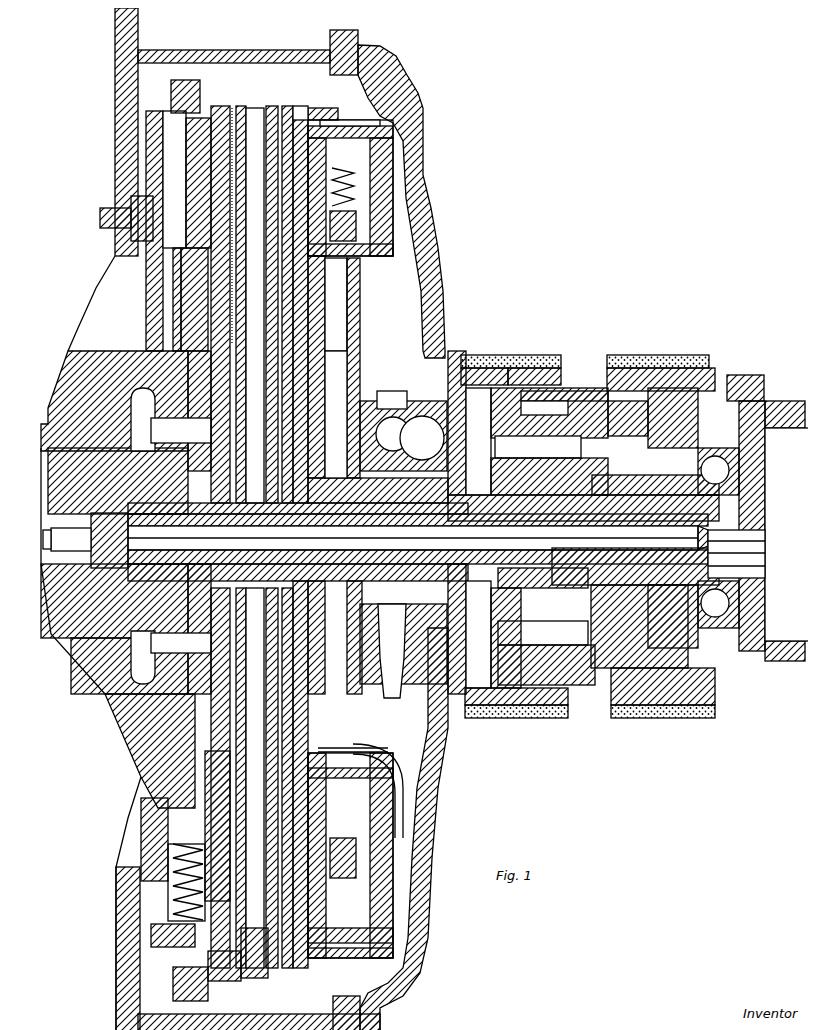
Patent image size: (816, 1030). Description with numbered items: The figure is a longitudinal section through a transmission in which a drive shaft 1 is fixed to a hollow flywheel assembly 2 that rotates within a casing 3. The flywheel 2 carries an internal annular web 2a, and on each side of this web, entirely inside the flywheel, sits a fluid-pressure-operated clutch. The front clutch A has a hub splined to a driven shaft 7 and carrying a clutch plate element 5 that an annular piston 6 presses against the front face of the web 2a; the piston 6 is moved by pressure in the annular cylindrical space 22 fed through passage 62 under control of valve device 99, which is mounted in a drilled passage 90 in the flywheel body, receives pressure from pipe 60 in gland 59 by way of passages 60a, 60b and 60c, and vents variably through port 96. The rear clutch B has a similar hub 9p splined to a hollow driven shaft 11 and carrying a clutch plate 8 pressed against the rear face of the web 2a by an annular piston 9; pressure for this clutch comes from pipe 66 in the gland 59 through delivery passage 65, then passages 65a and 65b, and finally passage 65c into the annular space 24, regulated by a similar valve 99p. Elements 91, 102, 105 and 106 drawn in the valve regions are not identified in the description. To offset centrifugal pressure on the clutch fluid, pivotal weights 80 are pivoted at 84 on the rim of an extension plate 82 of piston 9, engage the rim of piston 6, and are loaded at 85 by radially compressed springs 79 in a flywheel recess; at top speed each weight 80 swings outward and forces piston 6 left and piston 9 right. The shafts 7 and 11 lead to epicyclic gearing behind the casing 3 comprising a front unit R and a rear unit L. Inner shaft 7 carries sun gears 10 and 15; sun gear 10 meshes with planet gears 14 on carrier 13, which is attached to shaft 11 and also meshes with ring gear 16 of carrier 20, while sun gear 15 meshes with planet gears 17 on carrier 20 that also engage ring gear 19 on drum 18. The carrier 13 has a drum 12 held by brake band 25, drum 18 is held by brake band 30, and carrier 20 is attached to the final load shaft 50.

The drive shaft 1 is at (66, 648).
The flywheel assembly 2 is at (146, 148).
The internal annular web 2a is at (250, 108).
The casing 3 is at (232, 42).
The clutch plate element 5 is at (255, 305).
The annular piston 6 is at (210, 305).
The driven shaft 7 is at (469, 522).
The clutch plate 8 is at (245, 293).
The annular piston 9 is at (290, 280).
The hub 9p is at (317, 414).
The sun gear 10 is at (540, 506).
The hollow driven shaft 11 is at (496, 572).
The drum 12 is at (465, 347).
The carrier 13 is at (539, 413).
The planet gears 14 is at (555, 385).
The sun gear 15 is at (610, 575).
The ring gear 16 is at (568, 392).
The planet gears 17 is at (624, 402).
The drum 18 is at (735, 367).
The ring gear 19 is at (660, 405).
The carrier 20 is at (694, 528).
The annular cylindrical space 22 is at (185, 267).
The annular cylindrical space 24 is at (320, 740).
The brake band 25 is at (507, 347).
The brake band 30 is at (655, 347).
The final load shaft 50 is at (774, 498).
The gland 59 is at (529, 552).
The pipe 60 is at (376, 383).
The passage 60a is at (406, 495).
The passage 60b is at (345, 312).
The passage 60c is at (405, 196).
The passage 62 is at (298, 109).
The delivery passage 65 is at (338, 600).
The passage 65a is at (330, 780).
The passage 65b is at (350, 880).
The passage 65c is at (395, 800).
The pipe 66 is at (403, 655).
The springs 79 is at (162, 845).
The weight 80 is at (150, 926).
The extension plate 82 is at (255, 975).
The pivot 84 is at (215, 975).
The spring engagement point 85 is at (166, 970).
The drilled passage 90 is at (356, 172).
The cap 91 is at (350, 796).
The exhaust port 96 is at (327, 367).
The valve device 99 is at (315, 112).
The valve 99p is at (375, 945).
The plate 102 is at (350, 112).
The spring 105 is at (350, 180).
The piston 106 is at (360, 225).
The front clutch A is at (212, 207).
The rear clutch B is at (224, 190).
The rear unit L is at (650, 708).
The front unit R is at (510, 710).